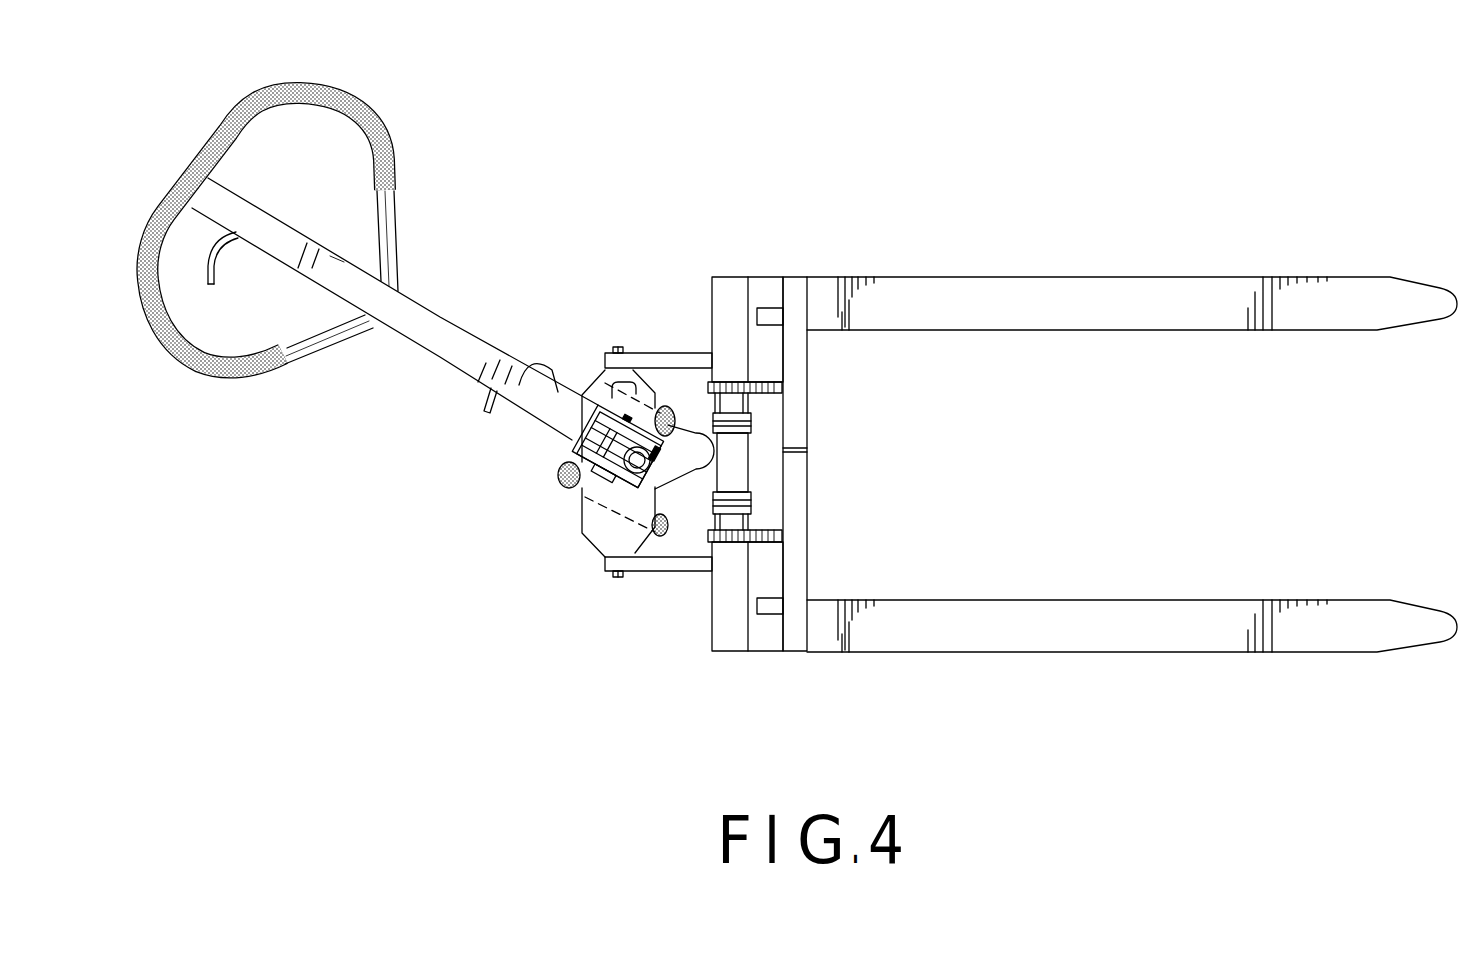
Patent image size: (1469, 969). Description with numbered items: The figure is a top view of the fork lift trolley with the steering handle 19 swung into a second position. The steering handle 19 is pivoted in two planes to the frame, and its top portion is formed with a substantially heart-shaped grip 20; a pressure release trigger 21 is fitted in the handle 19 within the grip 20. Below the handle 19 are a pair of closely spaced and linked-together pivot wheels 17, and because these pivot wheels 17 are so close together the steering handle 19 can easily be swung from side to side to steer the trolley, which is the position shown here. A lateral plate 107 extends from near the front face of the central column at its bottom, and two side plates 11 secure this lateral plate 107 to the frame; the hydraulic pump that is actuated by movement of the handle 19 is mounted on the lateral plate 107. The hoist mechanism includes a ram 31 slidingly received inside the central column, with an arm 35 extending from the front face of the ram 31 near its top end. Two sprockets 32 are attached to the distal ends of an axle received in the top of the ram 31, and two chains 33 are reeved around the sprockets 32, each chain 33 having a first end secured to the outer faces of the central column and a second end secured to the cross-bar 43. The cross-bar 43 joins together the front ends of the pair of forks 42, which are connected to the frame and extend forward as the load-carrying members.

The grip 20 is at (248, 100).
The pressure release trigger 21 is at (218, 275).
The steering handle 19 is at (462, 340).
The pivot wheels 17 is at (616, 393).
The lateral plate 107 is at (608, 533).
The side plates 11 is at (700, 358).
The arm 35 is at (672, 450).
The ram 31 is at (722, 468).
The sprockets 32 is at (735, 390).
The chains 33 is at (780, 390).
The cross-bar 43 is at (806, 507).
The forks 42 is at (1131, 277).